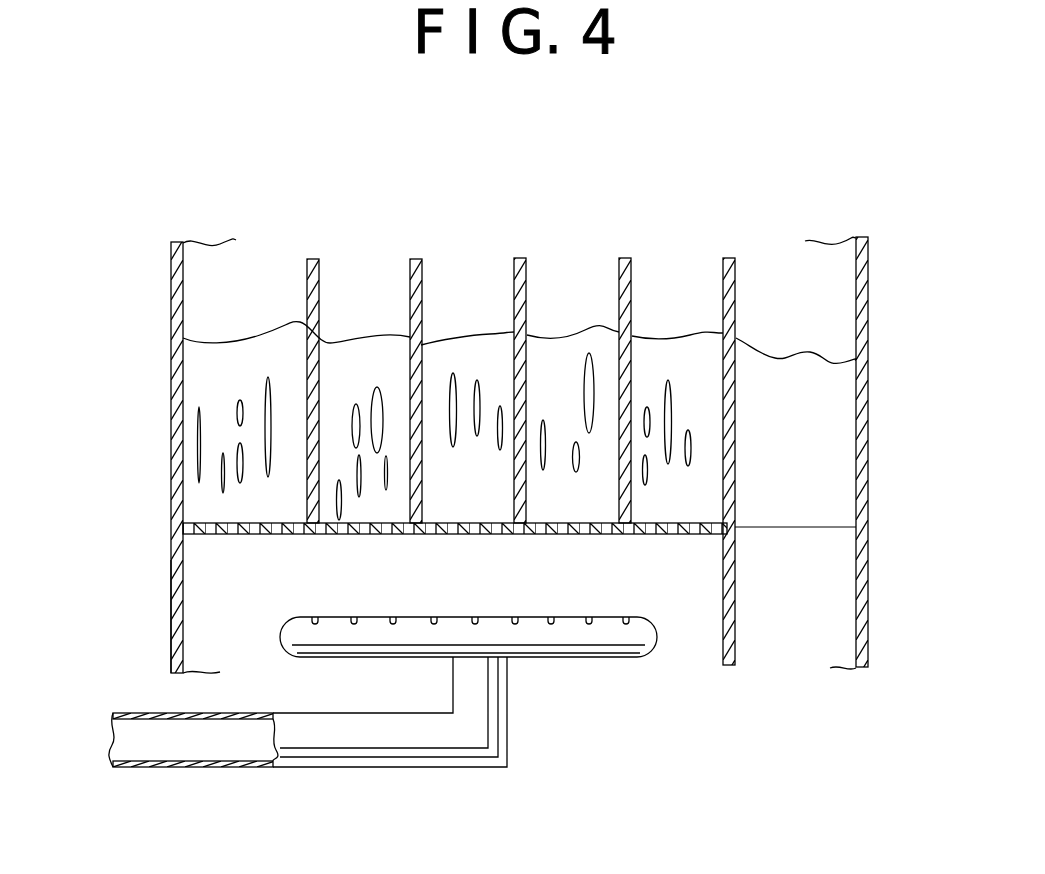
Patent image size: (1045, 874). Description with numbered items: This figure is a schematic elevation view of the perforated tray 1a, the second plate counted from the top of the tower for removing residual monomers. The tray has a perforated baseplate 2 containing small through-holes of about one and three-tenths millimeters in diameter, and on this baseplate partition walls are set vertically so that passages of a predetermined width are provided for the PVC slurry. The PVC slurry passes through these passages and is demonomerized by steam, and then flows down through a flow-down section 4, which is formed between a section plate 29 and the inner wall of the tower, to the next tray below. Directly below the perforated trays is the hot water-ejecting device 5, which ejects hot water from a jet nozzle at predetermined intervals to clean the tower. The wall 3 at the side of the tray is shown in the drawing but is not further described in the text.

The perforated tray 1a is at (303, 237).
The perforated baseplate 2 is at (268, 533).
The side wall 3 is at (172, 592).
The flow-down section 4 is at (817, 509).
The hot water-ejecting device 5 is at (570, 658).
The section plate 29 is at (217, 427).